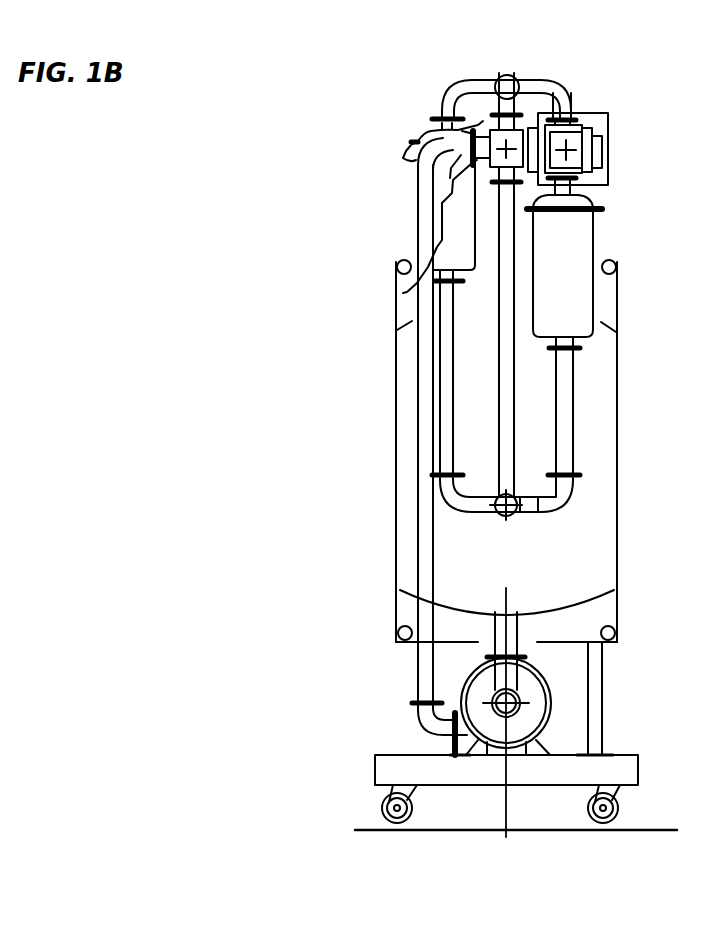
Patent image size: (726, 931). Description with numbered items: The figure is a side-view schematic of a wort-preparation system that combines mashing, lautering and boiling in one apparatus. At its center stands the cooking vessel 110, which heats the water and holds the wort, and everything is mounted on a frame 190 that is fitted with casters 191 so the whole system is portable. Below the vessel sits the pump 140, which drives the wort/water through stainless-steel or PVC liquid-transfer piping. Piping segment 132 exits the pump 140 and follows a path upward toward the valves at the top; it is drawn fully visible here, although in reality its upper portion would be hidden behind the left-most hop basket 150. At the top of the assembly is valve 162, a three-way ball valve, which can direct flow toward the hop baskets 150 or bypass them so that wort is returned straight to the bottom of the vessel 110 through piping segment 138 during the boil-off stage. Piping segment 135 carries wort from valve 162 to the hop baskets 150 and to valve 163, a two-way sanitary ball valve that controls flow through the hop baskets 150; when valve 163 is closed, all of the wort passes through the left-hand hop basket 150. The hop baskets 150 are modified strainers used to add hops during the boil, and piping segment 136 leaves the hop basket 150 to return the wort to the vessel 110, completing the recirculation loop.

The cooking vessel 110 is at (618, 420).
The piping segment 132 is at (423, 657).
The piping segment 135 is at (540, 80).
The piping segment 136 is at (552, 503).
The piping segment 138 is at (498, 347).
The pump 140 is at (532, 712).
The hop basket 150 is at (468, 267).
The valve 162 is at (478, 156).
The valve 163 is at (566, 150).
The frame 190 is at (374, 766).
The casters 191 is at (412, 798).